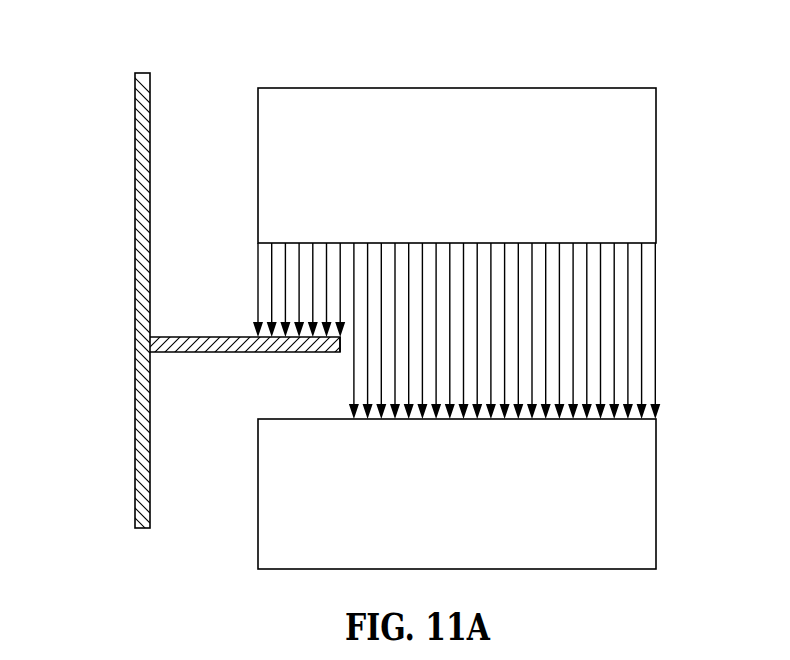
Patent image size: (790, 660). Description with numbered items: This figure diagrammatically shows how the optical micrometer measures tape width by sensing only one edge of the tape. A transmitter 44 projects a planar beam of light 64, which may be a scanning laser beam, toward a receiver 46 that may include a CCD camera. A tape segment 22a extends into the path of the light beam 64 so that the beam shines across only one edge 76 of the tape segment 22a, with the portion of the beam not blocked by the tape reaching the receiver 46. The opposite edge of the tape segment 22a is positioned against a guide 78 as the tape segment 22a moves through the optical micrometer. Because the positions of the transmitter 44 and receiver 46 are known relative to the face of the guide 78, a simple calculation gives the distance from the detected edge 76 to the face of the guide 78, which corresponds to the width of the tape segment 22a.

The transmitter 44 is at (306, 125).
The receiver 46 is at (273, 536).
The planar beam of light 64 is at (615, 322).
The edge of tape segment 76 is at (347, 345).
The guide 78 is at (143, 141).
The tape segment 22a is at (196, 352).